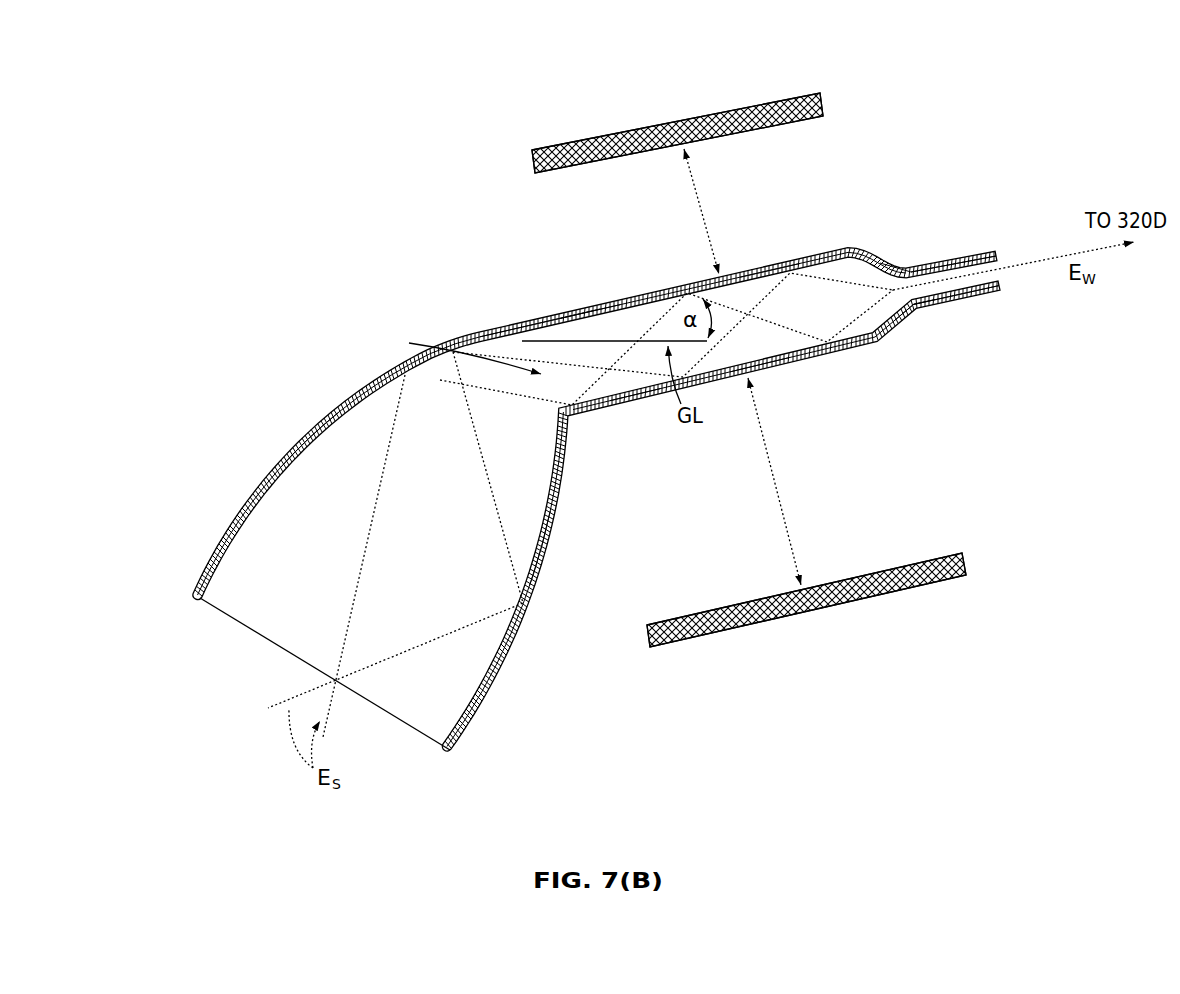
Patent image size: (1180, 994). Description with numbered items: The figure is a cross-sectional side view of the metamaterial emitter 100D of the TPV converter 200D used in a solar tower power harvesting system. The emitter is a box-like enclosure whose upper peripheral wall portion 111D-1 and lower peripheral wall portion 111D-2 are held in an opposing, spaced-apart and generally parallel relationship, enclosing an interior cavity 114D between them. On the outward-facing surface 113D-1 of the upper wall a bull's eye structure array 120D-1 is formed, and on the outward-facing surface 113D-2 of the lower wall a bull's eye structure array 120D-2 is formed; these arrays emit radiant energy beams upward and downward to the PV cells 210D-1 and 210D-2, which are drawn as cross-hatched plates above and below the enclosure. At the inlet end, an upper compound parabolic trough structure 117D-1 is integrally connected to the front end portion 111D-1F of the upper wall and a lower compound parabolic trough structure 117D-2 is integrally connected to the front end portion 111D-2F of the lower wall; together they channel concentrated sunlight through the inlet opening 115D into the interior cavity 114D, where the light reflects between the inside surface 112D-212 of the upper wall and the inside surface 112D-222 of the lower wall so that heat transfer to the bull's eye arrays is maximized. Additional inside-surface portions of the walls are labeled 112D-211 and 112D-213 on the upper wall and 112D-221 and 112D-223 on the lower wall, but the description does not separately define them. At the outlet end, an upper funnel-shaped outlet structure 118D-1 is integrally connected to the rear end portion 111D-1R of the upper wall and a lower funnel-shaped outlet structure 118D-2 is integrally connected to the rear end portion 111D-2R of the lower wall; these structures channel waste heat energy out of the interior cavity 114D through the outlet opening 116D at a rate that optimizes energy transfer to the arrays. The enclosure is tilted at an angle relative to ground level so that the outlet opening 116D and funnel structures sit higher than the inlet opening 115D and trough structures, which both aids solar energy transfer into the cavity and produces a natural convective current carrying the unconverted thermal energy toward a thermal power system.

The TPV converter 200D is at (273, 146).
The metamaterial emitter 100D is at (961, 240).
The PV cell 210D-1 is at (828, 99).
The PV cell 210D-2 is at (743, 633).
The upper peripheral wall portion 111D-1 is at (656, 291).
The rear end portion of upper peripheral wall portion 111D-1R is at (502, 329).
The front end portion of upper peripheral wall portion 111D-1F is at (856, 248).
The lower peripheral wall portion 111D-2 is at (794, 358).
The rear end portion of lower peripheral wall portion 111D-2R is at (578, 428).
The front end portion of lower peripheral wall portion 111D-2F is at (884, 339).
The first curved surface portion 112D-211 is at (317, 452).
The inside surface of upper peripheral wall portion 112D-212 is at (584, 321).
The first front transition portion 112D-213 is at (900, 283).
The second curved surface portion 112D-221 is at (543, 547).
The inside surface of lower peripheral wall portion 112D-222 is at (631, 387).
The second front transition portion 112D-223 is at (919, 303).
The outward-facing surface of upper wall portion 113D-1 is at (769, 260).
The outward-facing surface of lower wall portion 113D-2 is at (759, 378).
The interior cavity 114D is at (836, 313).
The inlet opening 115D is at (370, 536).
The outlet opening 116D is at (1017, 234).
The upper compound parabolic trough structure 117D-1 is at (315, 430).
The lower compound parabolic trough structure 117D-2 is at (503, 691).
The upper funnel-shaped outlet structure 118D-1 is at (914, 265).
The lower funnel-shaped outlet structure 118D-2 is at (957, 301).
The bull's eye structure array 120D-1 is at (702, 265).
The bull's eye structure array 120D-2 is at (734, 398).